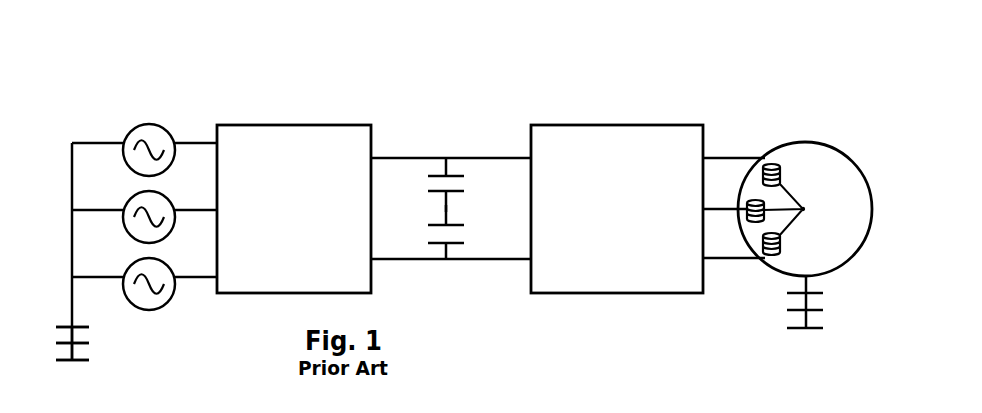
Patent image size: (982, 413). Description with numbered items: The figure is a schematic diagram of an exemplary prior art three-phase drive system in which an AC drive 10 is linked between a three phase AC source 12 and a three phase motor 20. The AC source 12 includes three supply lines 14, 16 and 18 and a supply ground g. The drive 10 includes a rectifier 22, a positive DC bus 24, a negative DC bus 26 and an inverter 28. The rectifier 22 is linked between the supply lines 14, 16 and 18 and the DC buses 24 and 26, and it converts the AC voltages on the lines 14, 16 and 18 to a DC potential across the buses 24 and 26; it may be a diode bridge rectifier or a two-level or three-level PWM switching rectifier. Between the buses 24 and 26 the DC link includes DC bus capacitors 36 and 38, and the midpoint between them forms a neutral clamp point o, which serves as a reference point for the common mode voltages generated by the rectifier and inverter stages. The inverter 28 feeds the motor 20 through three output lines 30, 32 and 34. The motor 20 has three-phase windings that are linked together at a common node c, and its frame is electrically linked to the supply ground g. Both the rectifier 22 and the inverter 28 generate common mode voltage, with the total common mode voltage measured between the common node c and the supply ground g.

The AC drive 10 is at (426, 82).
The three phase AC source 12 is at (134, 106).
The supply line 14 is at (190, 140).
The supply line 16 is at (186, 212).
The supply line 18 is at (190, 278).
The three phase motor 20 is at (805, 142).
The rectifier 22 is at (293, 125).
The positive DC bus 24 is at (495, 157).
The negative DC bus 26 is at (462, 262).
The inverter 28 is at (600, 125).
The motor phase line 30 is at (724, 208).
The motor phase line 32 is at (721, 157).
The motor phase line 34 is at (722, 260).
The DC bus capacitor 36 is at (443, 172).
The DC bus capacitor 38 is at (438, 222).
The neutral clamp point o is at (448, 205).
The common node c is at (806, 206).
The supply ground g is at (88, 343).